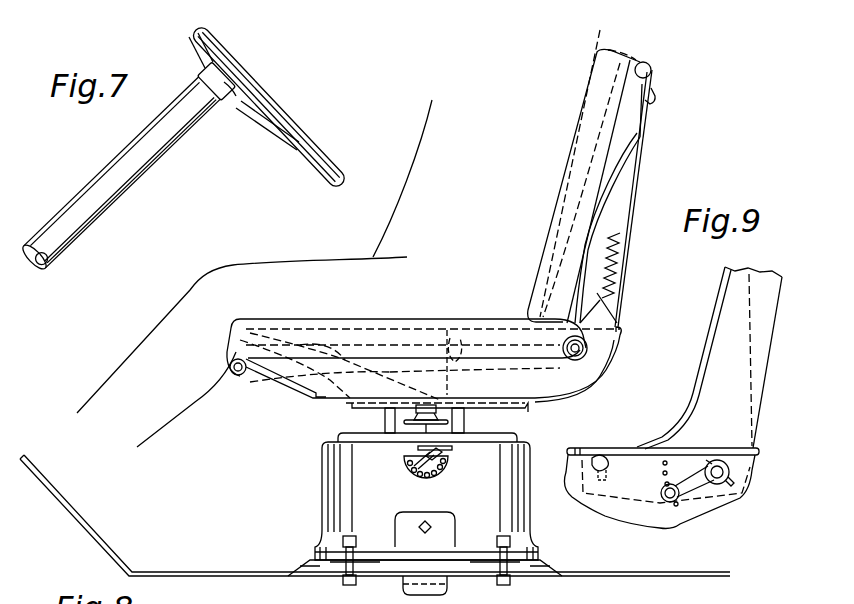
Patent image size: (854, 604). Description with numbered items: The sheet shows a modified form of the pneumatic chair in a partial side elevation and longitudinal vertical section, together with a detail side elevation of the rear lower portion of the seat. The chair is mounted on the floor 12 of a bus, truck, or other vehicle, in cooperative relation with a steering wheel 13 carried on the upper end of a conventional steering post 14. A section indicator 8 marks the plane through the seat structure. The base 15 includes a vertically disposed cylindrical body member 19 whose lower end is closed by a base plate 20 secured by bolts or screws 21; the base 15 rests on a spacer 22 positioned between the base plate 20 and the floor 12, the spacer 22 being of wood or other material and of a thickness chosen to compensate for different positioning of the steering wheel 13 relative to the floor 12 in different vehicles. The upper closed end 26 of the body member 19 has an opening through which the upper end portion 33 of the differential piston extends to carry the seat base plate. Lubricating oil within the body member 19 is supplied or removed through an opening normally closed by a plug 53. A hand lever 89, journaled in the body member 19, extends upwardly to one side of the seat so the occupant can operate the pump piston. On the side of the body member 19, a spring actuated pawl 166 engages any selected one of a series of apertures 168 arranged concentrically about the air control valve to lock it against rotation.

In FIG. 7, the steering wheel 13 is at (270, 122).
In FIG. 7, the steering post 14 is at (133, 183).
In FIG. 9, the section line 8- 8 is at (427, 596).
In FIG. 9, the floor 12 is at (118, 549).
In FIG. 9, the hand lever 89 is at (340, 393).
In FIG. 9, the upper end portion of the piston 33 is at (465, 422).
In FIG. 9, the upper closed end of body member 26 is at (520, 446).
In FIG. 9, the spring actuated pawl 166 is at (400, 455).
In FIG. 9, the apertures 168 is at (440, 456).
In FIG. 9, the cylindrical body member 19 is at (479, 502).
In FIG. 9, the base 15 is at (322, 547).
In FIG. 9, the base plate 20 is at (540, 559).
In FIG. 9, the bolts or screws 21 is at (512, 541).
In FIG. 9, the spacer 22 is at (310, 569).
In FIG. 9, the plug 53 is at (430, 532).